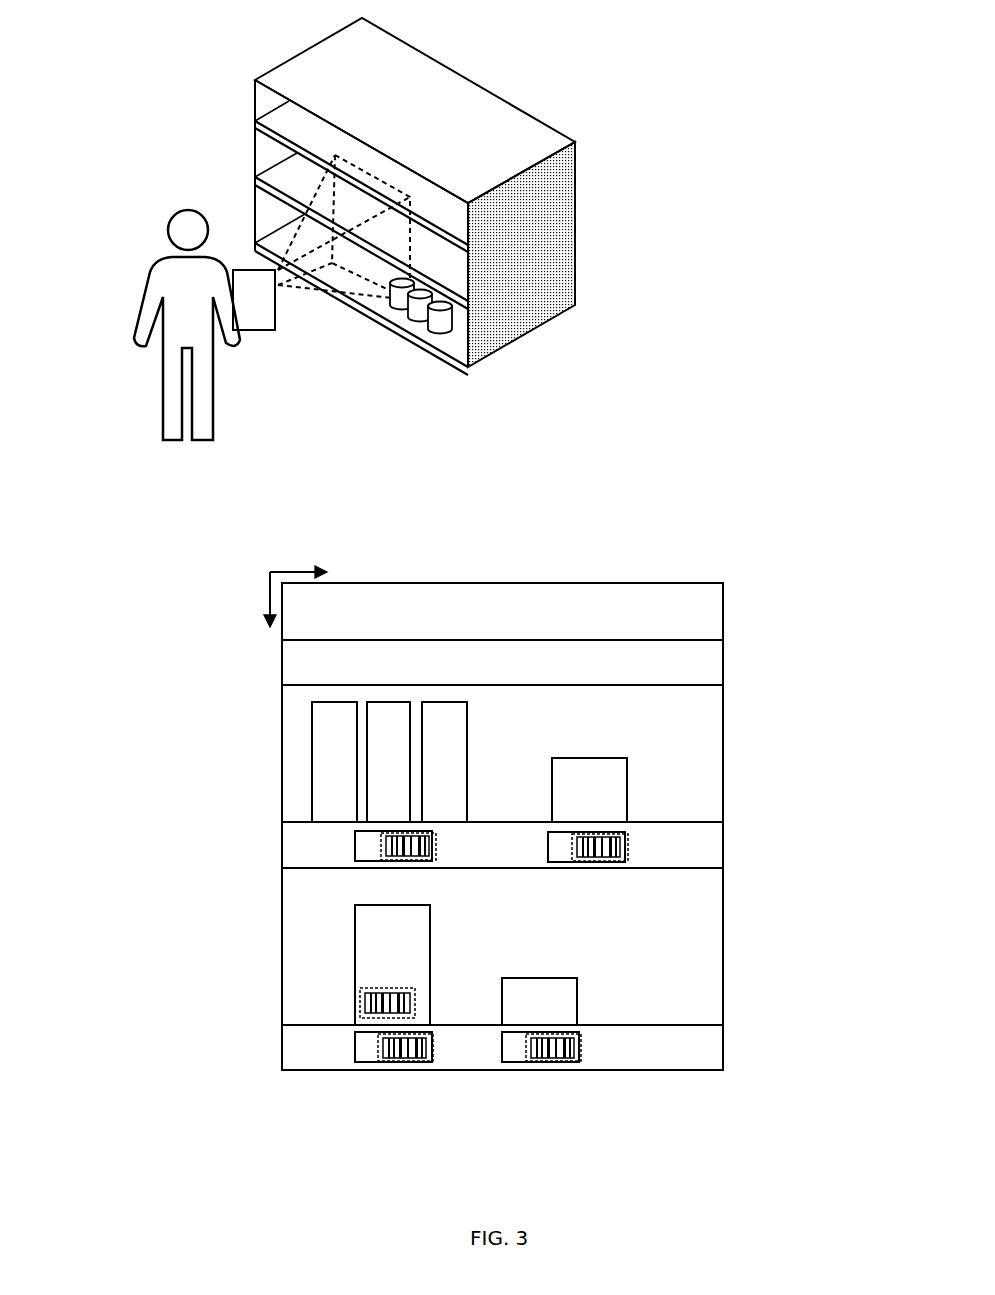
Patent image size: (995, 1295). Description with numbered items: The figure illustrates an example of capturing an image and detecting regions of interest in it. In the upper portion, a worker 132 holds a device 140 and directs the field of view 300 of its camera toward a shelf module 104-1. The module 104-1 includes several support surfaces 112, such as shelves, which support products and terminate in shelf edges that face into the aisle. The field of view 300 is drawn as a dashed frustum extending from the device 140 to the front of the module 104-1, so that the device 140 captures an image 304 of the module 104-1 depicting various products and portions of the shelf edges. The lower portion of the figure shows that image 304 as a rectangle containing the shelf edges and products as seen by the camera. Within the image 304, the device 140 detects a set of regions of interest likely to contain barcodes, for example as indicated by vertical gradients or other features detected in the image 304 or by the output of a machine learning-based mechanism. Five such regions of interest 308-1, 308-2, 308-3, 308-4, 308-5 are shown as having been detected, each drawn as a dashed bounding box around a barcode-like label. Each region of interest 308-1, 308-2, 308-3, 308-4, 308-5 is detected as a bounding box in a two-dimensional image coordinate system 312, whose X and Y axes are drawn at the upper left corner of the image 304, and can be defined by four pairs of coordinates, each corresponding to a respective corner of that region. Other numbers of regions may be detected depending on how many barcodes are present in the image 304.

The shelf module 104-1 is at (549, 324).
The support surface 112 is at (277, 118).
The worker 132 is at (162, 420).
The device 140 is at (268, 330).
The field of view 300 is at (312, 292).
The image 304 is at (737, 609).
The region of interest 308-1 is at (380, 840).
The region of interest 308-2 is at (628, 845).
The region of interest 308-3 is at (360, 1002).
The region of interest 308-4 is at (378, 1053).
The region of interest 308-5 is at (580, 1045).
The image coordinate system 312 is at (270, 572).